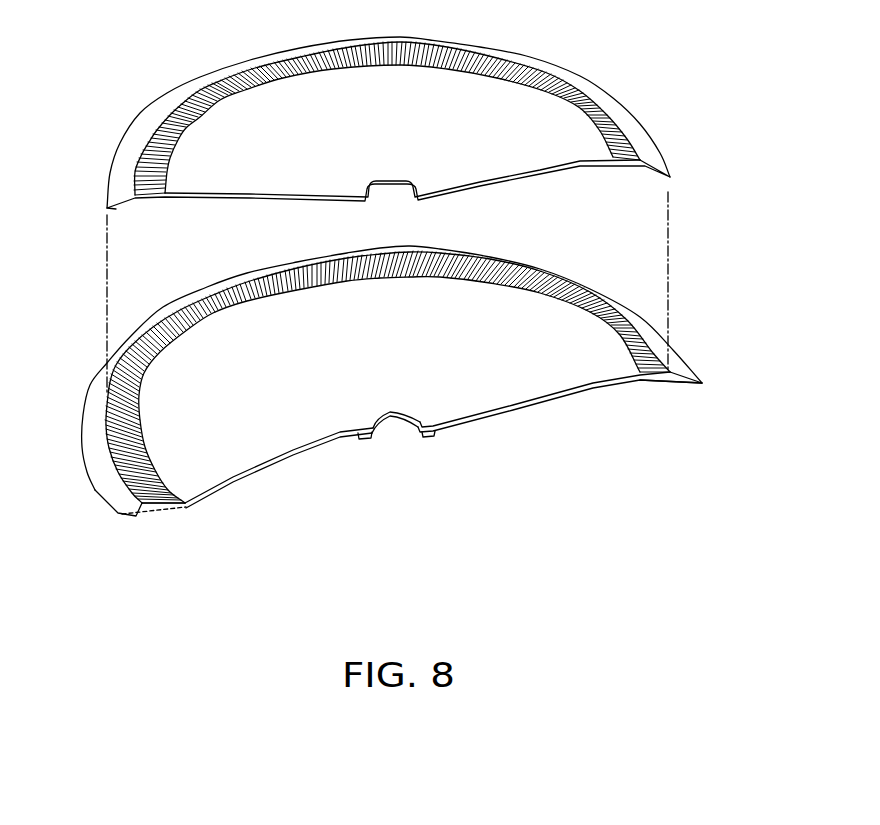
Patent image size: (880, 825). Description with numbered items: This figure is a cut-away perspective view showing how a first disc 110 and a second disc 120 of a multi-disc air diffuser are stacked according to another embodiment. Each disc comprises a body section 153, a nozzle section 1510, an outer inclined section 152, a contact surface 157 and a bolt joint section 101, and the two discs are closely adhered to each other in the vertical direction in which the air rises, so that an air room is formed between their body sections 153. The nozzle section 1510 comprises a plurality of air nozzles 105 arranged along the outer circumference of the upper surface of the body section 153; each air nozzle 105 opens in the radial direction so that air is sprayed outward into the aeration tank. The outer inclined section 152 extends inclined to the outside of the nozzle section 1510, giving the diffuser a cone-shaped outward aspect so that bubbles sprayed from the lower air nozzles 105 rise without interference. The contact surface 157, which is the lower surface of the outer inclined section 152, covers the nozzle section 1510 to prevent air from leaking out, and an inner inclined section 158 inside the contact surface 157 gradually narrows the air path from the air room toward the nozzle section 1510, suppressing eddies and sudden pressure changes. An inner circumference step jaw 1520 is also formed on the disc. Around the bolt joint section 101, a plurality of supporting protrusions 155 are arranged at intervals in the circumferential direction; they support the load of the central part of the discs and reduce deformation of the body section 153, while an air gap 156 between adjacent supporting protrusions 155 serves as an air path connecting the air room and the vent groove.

The first disc 110 is at (571, 92).
The air nozzle 105 is at (411, 365).
The inner circumference step jaw 1520 is at (517, 295).
The second disc 120 is at (578, 373).
The outer inclined section 152 is at (680, 357).
The body section 153 is at (516, 398).
The bolt joint section 101 is at (400, 413).
The supporting protrusion 155 is at (428, 430).
The air gap 156 is at (390, 425).
The nozzle section 1510 is at (115, 468).
The contact surface 157 is at (122, 517).
The inner inclined section 158 is at (150, 511).